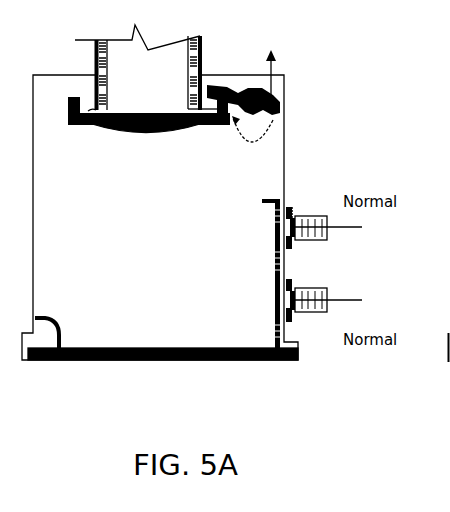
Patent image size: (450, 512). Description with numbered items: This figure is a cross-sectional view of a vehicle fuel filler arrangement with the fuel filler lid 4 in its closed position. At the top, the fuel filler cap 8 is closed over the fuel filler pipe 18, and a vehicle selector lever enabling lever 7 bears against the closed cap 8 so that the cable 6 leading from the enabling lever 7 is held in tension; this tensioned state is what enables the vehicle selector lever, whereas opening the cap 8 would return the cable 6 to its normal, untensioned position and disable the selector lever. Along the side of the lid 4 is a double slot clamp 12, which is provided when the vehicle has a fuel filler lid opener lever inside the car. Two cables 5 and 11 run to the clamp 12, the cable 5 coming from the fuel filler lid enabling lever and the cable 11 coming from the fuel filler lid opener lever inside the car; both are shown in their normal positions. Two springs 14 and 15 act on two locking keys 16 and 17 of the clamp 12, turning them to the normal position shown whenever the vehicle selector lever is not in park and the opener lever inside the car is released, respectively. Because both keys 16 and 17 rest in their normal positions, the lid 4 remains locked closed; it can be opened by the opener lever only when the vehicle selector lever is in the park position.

The fuel filler lid 4 is at (204, 341).
The cable 5 is at (334, 231).
The cable 6 is at (312, 60).
The vehicle selector lever enabling lever 7 is at (231, 90).
The fuel filler cap 8 is at (126, 130).
The cable 11 is at (335, 302).
The double slot clamp 12 is at (267, 263).
The spring 14 is at (308, 213).
The spring 15 is at (305, 284).
The locking key 16 is at (286, 227).
The locking key 17 is at (283, 297).
The fuel filler pipe 18 is at (86, 55).